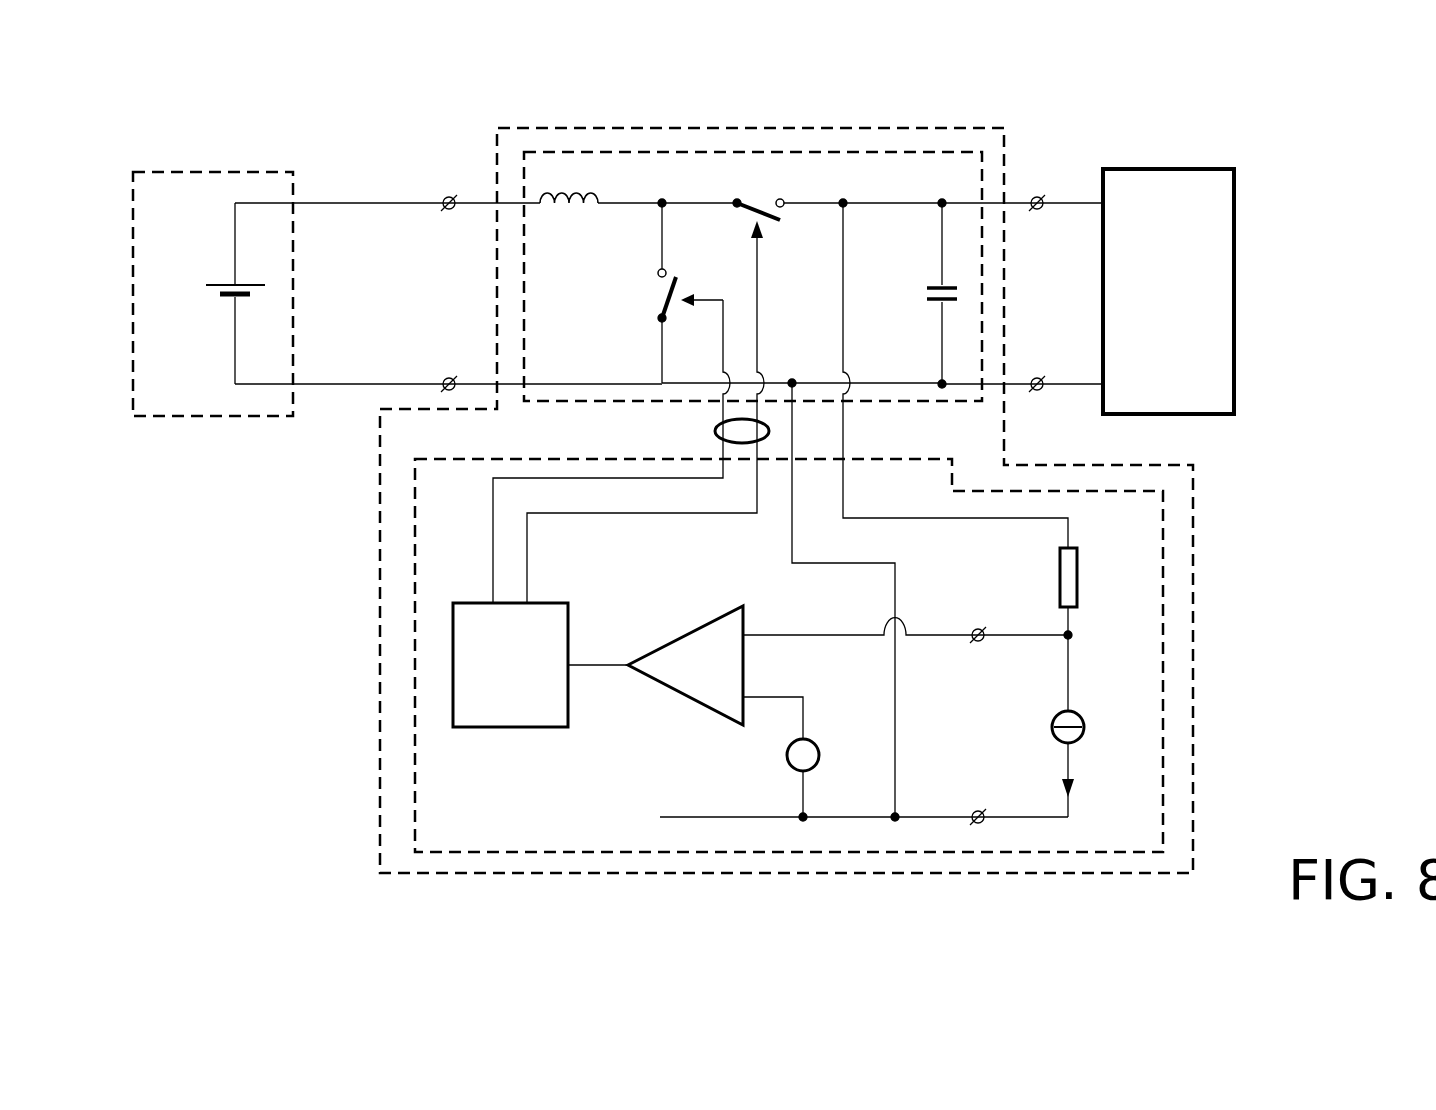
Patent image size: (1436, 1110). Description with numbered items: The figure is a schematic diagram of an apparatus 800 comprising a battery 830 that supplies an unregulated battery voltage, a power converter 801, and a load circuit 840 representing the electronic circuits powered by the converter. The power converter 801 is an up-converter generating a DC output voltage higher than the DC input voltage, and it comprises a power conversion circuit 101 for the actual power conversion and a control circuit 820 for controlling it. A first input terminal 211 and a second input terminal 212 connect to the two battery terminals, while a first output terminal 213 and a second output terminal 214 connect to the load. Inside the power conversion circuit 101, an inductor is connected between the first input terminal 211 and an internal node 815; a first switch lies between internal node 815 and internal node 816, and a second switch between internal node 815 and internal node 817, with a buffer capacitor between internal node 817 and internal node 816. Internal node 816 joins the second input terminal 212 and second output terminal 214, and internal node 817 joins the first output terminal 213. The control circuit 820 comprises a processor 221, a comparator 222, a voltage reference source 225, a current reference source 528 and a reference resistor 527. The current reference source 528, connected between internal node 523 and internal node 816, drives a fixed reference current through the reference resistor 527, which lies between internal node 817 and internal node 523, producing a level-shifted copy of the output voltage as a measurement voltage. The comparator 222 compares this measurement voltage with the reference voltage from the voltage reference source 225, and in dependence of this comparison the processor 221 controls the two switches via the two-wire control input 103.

The apparatus 800 is at (1064, 90).
The power converter 801 is at (585, 127).
The power conversion circuit 101 is at (672, 151).
The battery 830 is at (200, 172).
The load circuit 840 is at (1160, 168).
The first input terminal 211 is at (335, 202).
The second input terminal 212 is at (338, 386).
The first output terminal 213 is at (1068, 200).
The second output terminal 214 is at (1074, 388).
The internal node 815 is at (666, 207).
The internal node 817 is at (847, 207).
The control input 103 is at (715, 431).
The control circuit 820 is at (1166, 686).
The processor 221 is at (510, 729).
The comparator 222 is at (688, 632).
The voltage reference source 225 is at (787, 757).
The internal node 816 is at (898, 812).
The reference resistor 527 is at (1062, 574).
The internal node 523 is at (1074, 634).
The current reference source 528 is at (1080, 742).